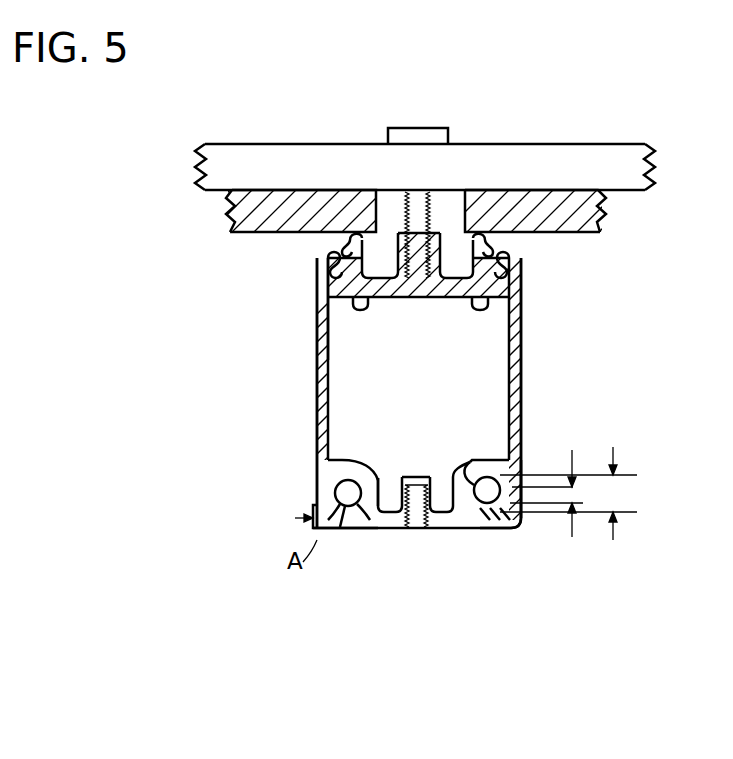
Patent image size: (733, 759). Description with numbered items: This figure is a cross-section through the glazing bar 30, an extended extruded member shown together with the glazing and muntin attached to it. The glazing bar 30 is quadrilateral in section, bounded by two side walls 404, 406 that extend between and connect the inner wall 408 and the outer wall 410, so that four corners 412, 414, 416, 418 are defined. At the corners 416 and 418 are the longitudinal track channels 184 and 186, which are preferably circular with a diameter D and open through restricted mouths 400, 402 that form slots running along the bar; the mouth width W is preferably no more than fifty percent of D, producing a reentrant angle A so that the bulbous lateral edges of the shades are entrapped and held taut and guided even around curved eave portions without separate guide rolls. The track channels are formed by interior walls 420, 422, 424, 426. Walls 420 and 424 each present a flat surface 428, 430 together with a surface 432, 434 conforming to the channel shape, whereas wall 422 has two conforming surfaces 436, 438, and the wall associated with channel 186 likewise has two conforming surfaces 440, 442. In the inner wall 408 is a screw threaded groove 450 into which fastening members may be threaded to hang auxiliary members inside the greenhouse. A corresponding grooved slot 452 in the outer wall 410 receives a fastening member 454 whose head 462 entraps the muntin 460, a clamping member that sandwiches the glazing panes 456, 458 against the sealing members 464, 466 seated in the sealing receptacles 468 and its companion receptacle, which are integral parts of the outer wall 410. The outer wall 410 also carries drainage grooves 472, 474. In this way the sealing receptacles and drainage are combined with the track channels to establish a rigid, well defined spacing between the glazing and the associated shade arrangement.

The glazing bar 30 is at (523, 333).
The track channel 184 is at (490, 512).
The track channel 186 is at (335, 493).
The mouth 400 is at (513, 493).
The mouth 402 is at (340, 497).
The side wall 404 is at (515, 402).
The side wall 406 is at (318, 353).
The inner wall 408 is at (482, 512).
The outer wall 410 is at (470, 300).
The corner 412 is at (527, 290).
The corner 414 is at (330, 304).
The corner 416 is at (522, 530).
The corner 418 is at (322, 516).
The interior wall 420 is at (493, 458).
The interior wall 422 is at (458, 485).
The interior wall 424 is at (360, 462).
The interior wall 426 is at (378, 490).
The flat surface 428 is at (492, 470).
The flat surface 430 is at (342, 460).
The channel-conforming surface 432 is at (500, 522).
The channel-conforming surface 434 is at (345, 495).
The channel-conforming surface 436 is at (443, 513).
The channel-conforming surface 438 is at (478, 522).
The channel-conforming surface 440 is at (375, 478).
The channel-conforming surface 442 is at (350, 505).
The screw threaded groove 450 is at (415, 528).
The grooved slot 452 is at (448, 282).
The fastening member 454 is at (438, 240).
The glazing pane 456 is at (562, 192).
The glazing pane 458 is at (278, 226).
The muntin 460 is at (315, 156).
The head 462 is at (404, 128).
The sealing member 464 is at (347, 238).
The sealing member 466 is at (493, 237).
The sealing receptacle 468 is at (347, 258).
The drainage groove 472 is at (520, 277).
The drainage groove 474 is at (320, 266).